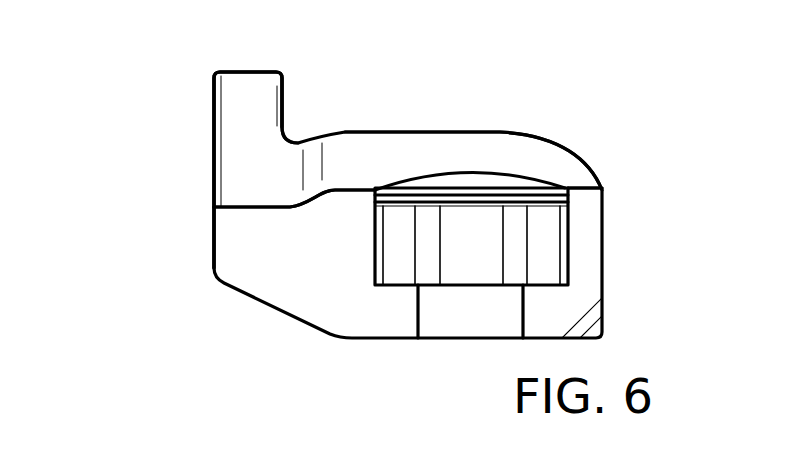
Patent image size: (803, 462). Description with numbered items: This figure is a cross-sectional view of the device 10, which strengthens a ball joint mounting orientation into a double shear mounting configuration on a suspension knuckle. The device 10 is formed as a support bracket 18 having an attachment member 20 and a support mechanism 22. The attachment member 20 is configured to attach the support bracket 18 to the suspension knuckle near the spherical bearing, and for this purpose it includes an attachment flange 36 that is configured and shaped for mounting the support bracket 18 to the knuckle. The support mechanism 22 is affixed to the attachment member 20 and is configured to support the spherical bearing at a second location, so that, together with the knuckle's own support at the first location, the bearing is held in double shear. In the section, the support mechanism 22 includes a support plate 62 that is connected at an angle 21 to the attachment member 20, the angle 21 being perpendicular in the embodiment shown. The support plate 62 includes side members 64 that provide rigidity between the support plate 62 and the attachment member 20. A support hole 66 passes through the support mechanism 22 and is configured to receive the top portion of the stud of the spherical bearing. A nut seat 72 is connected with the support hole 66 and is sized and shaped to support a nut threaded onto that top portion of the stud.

The device 10 is at (432, 231).
The support bracket 18 is at (232, 168).
The attachment member 20 is at (183, 170).
The attachment flange 36 is at (172, 127).
The angle 21 is at (332, 126).
The support mechanism 22 is at (583, 125).
The support plate 62 is at (444, 107).
The side members 64 is at (367, 140).
The support hole 66 is at (420, 320).
The nut seat 72 is at (373, 250).